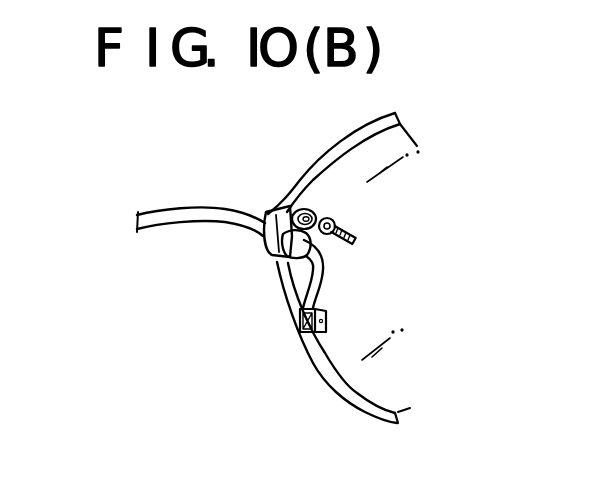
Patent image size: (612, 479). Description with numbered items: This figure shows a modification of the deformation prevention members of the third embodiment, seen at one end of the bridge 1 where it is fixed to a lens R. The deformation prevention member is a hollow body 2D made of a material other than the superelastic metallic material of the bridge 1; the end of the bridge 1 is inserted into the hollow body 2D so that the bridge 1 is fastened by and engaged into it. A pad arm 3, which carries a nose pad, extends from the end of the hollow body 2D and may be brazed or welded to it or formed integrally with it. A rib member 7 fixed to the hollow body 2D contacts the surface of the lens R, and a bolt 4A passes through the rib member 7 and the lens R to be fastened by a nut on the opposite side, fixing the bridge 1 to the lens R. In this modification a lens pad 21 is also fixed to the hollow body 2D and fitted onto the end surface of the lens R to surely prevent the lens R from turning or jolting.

The bridge 1 is at (187, 210).
The rib member 7 is at (325, 213).
The bolt 4A is at (352, 235).
The hollow body 2D is at (320, 258).
The pad arm 3 is at (325, 288).
The lens pad 21 is at (265, 256).
The lens R is at (413, 358).